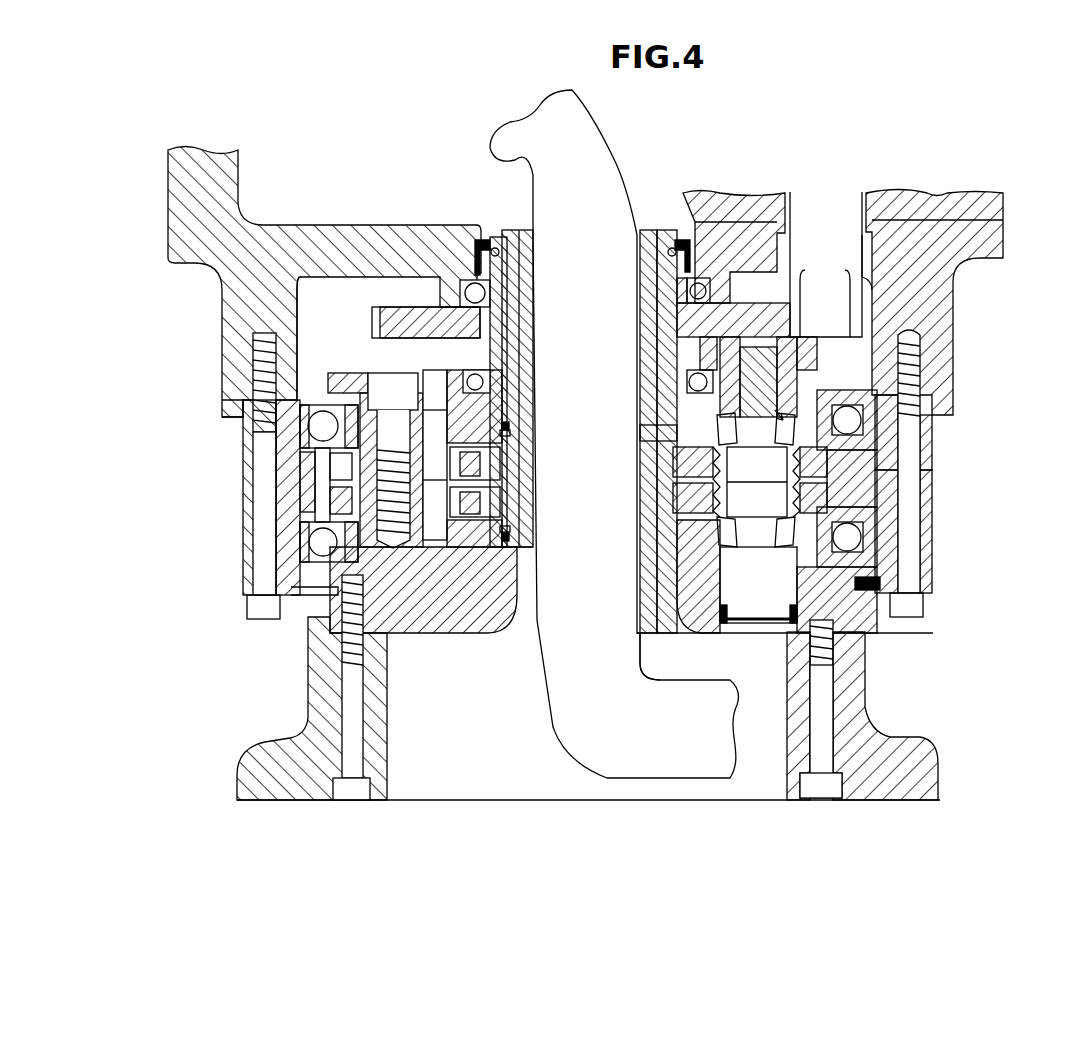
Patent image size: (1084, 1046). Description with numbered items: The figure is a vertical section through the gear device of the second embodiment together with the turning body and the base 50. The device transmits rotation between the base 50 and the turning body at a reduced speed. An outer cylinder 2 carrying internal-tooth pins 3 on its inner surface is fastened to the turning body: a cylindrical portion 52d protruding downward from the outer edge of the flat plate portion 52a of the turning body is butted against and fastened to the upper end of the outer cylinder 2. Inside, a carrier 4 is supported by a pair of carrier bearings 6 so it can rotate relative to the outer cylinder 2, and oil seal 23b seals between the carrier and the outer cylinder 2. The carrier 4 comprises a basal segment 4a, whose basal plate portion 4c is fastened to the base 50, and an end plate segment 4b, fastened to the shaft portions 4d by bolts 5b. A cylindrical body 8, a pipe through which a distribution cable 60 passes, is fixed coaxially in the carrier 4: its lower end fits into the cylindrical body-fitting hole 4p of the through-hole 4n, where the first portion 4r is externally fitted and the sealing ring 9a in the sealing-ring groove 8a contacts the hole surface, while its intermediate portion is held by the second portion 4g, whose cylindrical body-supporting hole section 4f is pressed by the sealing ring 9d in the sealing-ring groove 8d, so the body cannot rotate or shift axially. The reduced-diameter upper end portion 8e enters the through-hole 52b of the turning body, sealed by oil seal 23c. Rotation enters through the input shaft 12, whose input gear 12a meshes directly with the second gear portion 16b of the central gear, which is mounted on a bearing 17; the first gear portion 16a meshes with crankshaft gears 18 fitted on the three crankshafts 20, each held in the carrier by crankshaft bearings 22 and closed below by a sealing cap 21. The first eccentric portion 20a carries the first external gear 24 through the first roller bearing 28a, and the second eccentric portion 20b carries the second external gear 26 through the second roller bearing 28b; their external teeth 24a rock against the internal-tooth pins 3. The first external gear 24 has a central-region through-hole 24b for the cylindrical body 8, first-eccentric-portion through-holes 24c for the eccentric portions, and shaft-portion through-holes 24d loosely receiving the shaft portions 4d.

The distribution cable 60 is at (637, 780).
The flat plate portion 52a is at (293, 223).
The cylindrical portion 52d is at (222, 397).
The bolt 5b is at (265, 380).
The second gear portion 16b is at (400, 303).
The bearing 17 is at (402, 303).
The first gear portion 16a is at (673, 297).
The oil seal 23c is at (480, 237).
The upper end portion 8e is at (496, 247).
The cylindrical body 8 is at (443, 277).
The cylindrical body-supporting hole section 4f is at (645, 383).
The second portion 4g is at (667, 433).
The outer cylinder 2 is at (240, 543).
The carrier 4 is at (135, 438).
The basal segment 4a is at (172, 455).
The end plate segment 4b is at (313, 437).
The shaft portion 4d is at (328, 473).
The basal plate portion 4c is at (353, 533).
The central-region through-hole 24b is at (500, 468).
The shaft-portion through-hole 24d is at (443, 483).
The sealing-ring groove 8d is at (508, 427).
The sealing ring 9d is at (509, 434).
The cylindrical body-fitting hole 4p is at (508, 531).
The sealing ring 9a is at (509, 538).
The sealing-ring groove 8a is at (517, 546).
The base 50 is at (308, 680).
The through-hole 52b is at (693, 222).
The crankshaft gear 18 is at (760, 377).
The input shaft 12 is at (840, 250).
The input gear 12a is at (860, 310).
The crankshaft 20 is at (787, 400).
The internal-tooth pin 3 is at (790, 475).
The first external gear 24 is at (820, 463).
The external teeth 24a is at (840, 470).
The second external gear 26 is at (863, 527).
The first roller bearing 28a is at (850, 420).
The second roller bearing 28b is at (850, 540).
The first eccentric portion 20a is at (893, 395).
The second eccentric portion 20b is at (893, 560).
The carrier bearing 6 is at (920, 360).
The first-eccentric-portion through-hole 24c is at (727, 470).
The first portion 4r is at (665, 592).
The through-hole 4n is at (637, 632).
The crankshaft bearing 22 is at (800, 415).
The oil seal 23b is at (862, 618).
The sealing cap 21 is at (867, 700).